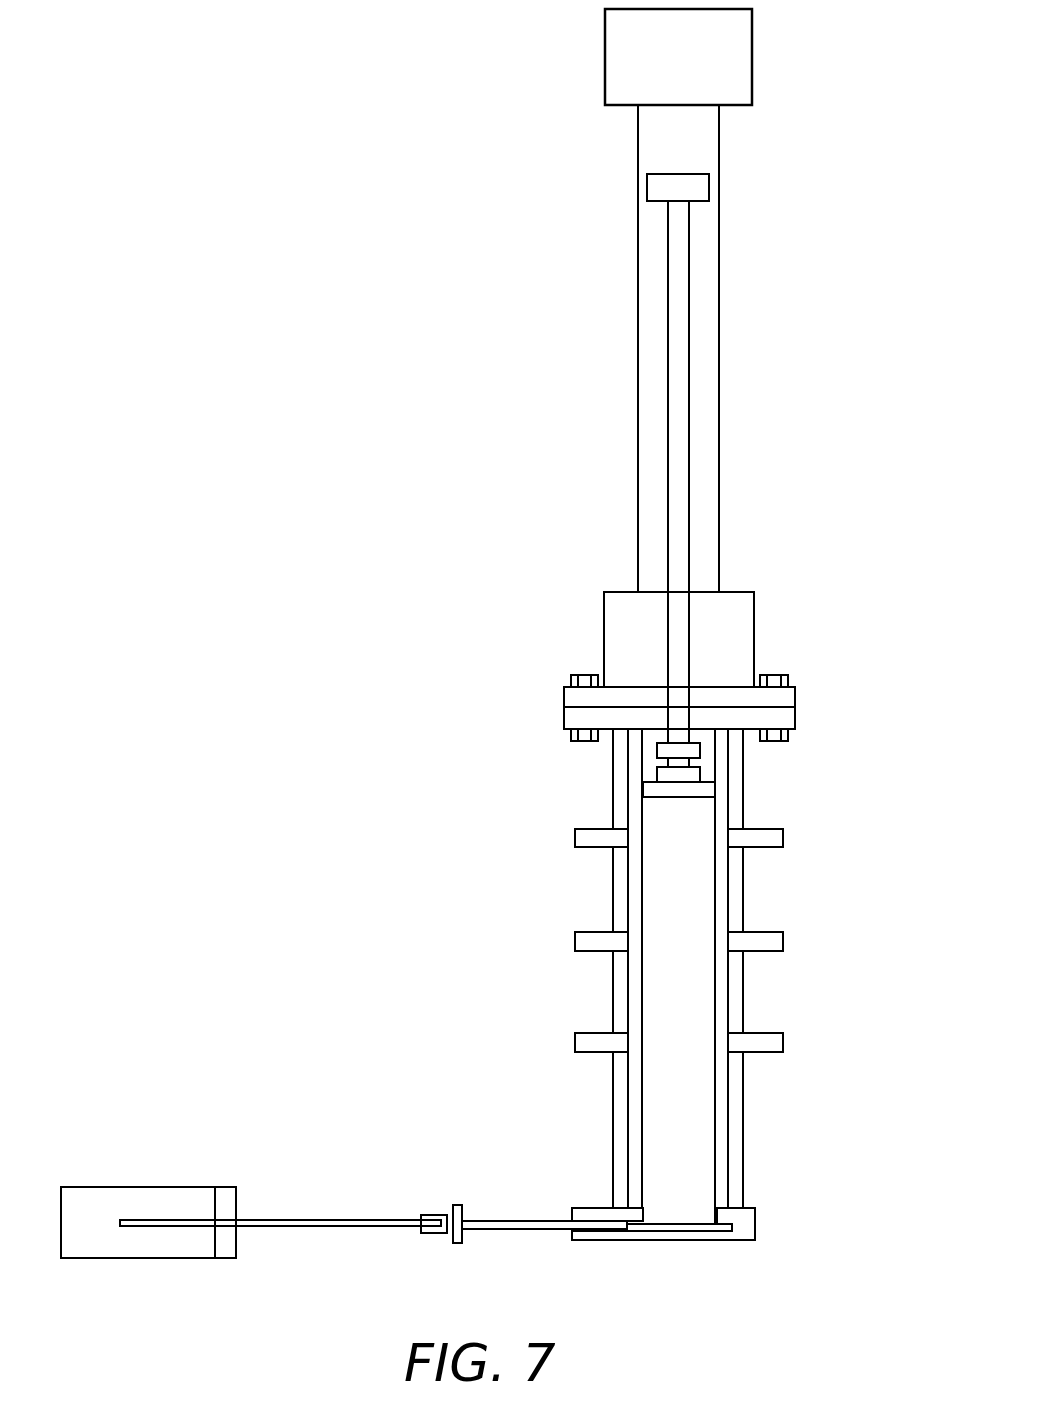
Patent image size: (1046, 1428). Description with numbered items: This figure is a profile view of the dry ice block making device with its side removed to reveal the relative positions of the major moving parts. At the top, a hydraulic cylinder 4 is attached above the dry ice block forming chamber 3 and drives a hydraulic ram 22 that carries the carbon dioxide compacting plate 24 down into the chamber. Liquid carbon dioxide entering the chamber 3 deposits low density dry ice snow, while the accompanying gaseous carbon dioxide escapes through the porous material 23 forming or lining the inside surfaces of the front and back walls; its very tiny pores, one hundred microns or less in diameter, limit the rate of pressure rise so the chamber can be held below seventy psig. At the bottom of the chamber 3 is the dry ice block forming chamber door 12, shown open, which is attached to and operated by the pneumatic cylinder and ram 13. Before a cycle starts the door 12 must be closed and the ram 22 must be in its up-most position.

The dry ice block forming chamber 3 is at (687, 927).
The hydraulic cylinder 4 is at (703, 327).
The dry ice block forming chamber door 12 is at (492, 1231).
The pneumatic cylinder and ram 13 is at (247, 1247).
The hydraulic ram 22 is at (682, 440).
The porous material 23 is at (642, 1162).
The carbon dioxide compacting plate 24 is at (673, 789).